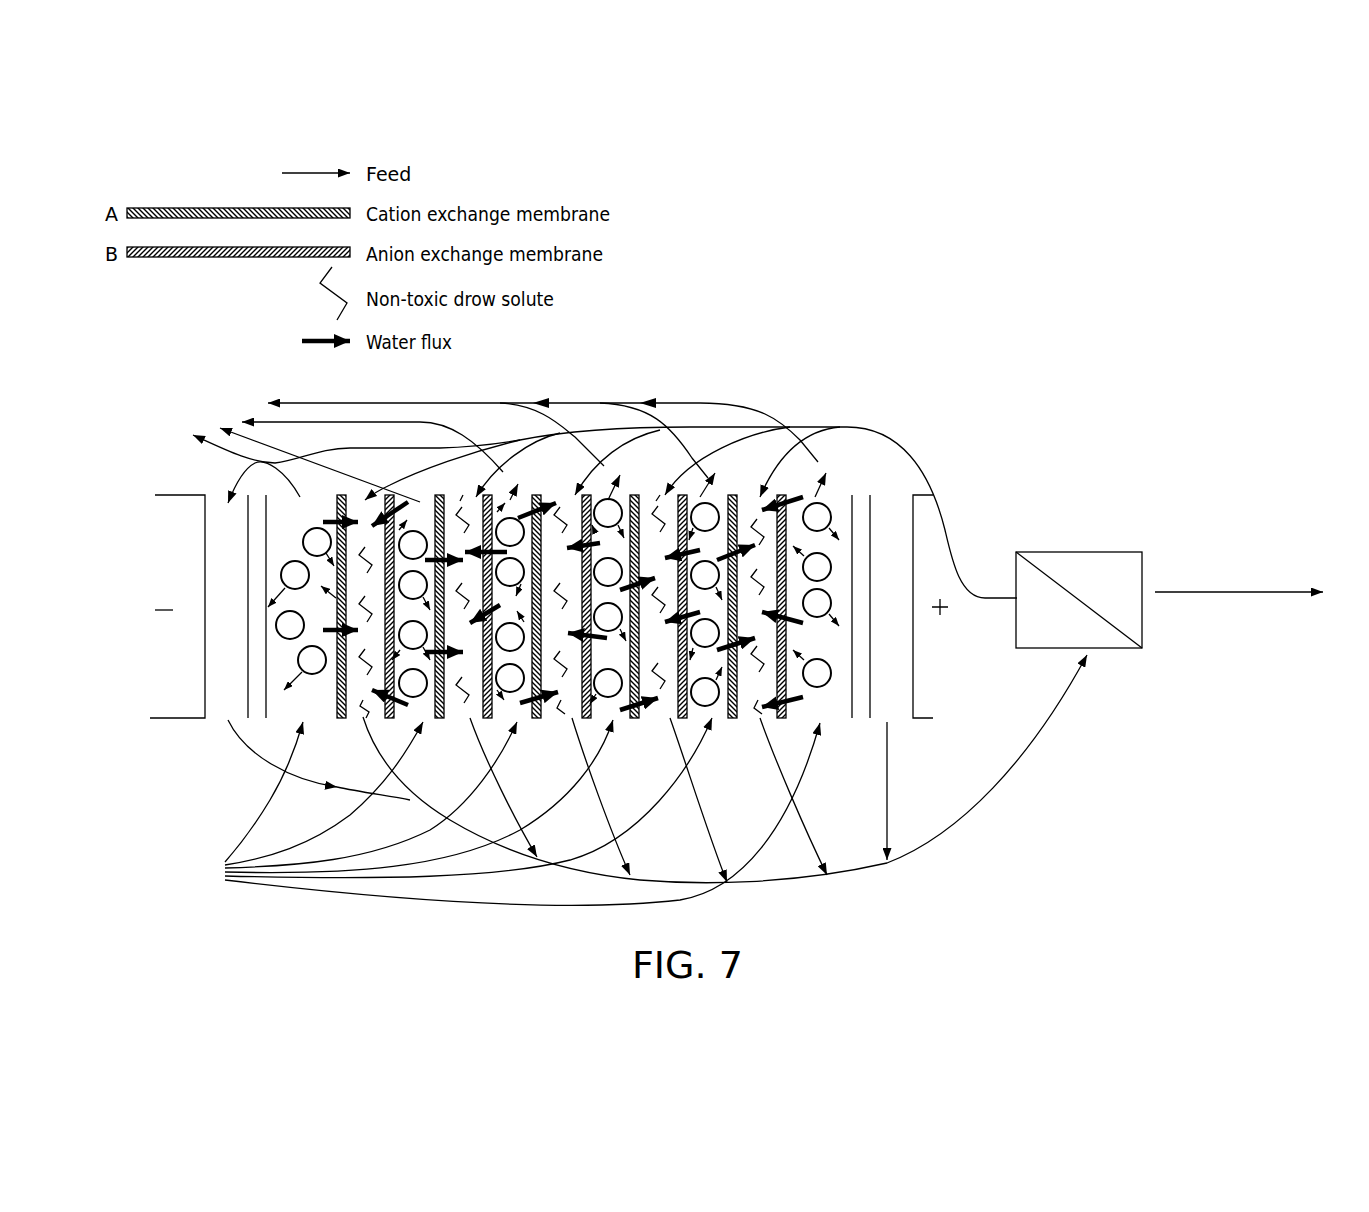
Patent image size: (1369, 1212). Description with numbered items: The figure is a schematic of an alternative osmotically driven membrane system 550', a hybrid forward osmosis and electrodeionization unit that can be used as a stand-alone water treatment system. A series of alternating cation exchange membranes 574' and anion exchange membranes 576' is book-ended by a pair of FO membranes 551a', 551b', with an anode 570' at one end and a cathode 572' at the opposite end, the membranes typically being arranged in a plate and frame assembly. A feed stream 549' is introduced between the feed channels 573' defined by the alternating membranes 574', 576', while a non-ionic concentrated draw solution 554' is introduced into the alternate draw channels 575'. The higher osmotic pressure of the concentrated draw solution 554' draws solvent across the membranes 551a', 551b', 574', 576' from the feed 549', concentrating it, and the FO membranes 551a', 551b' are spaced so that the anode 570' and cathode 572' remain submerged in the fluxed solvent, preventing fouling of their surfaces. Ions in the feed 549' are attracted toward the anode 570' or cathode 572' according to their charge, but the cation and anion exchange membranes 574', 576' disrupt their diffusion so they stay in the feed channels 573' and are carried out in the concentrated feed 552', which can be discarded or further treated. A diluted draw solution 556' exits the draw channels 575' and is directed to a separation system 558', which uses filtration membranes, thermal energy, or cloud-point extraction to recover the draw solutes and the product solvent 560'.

The feed stream 549' is at (485, 811).
The osmotically driven membrane system 550' is at (582, 540).
The FO membrane 551a' is at (226, 631).
The FO membrane 551b' is at (919, 620).
The concentrated feed 552' is at (482, 450).
The concentrated draw solution 554' is at (691, 505).
The diluted draw solution 556' is at (657, 769).
The separation system 558' is at (1079, 582).
The product solvent 560' is at (1239, 578).
The anode 570' is at (140, 606).
The cathode 572' is at (972, 606).
The feed channels 573' is at (438, 794).
The cation exchange membrane 574' is at (286, 790).
The draw channels 575' is at (383, 479).
The anion exchange membrane 576' is at (799, 481).